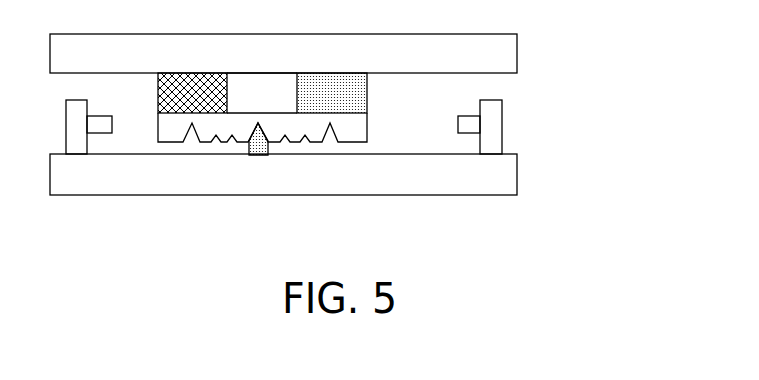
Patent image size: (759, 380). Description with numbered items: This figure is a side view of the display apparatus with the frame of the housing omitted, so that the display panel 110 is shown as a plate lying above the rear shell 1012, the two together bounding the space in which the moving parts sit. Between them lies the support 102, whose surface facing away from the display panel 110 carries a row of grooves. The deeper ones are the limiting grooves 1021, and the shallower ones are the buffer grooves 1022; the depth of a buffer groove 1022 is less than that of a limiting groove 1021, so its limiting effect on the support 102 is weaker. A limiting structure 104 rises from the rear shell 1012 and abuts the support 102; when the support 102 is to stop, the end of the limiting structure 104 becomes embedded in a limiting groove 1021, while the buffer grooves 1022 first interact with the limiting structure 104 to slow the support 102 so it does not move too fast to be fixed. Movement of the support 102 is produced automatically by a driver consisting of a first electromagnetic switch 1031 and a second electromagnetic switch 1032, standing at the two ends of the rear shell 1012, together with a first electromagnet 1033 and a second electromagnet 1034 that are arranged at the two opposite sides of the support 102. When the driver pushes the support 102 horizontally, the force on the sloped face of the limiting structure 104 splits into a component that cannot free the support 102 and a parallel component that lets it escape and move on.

The display panel 110 is at (476, 55).
The rear shell 1012 is at (505, 174).
The first electromagnetic switch 1031 is at (78, 133).
The second electromagnetic switch 1032 is at (494, 133).
The first electromagnet 1033 is at (105, 122).
The second electromagnet 1034 is at (470, 122).
The support 102 is at (360, 127).
The limiting groove 1021 is at (194, 154).
The buffer groove 1022 is at (351, 153).
The limiting structure 104 is at (262, 155).